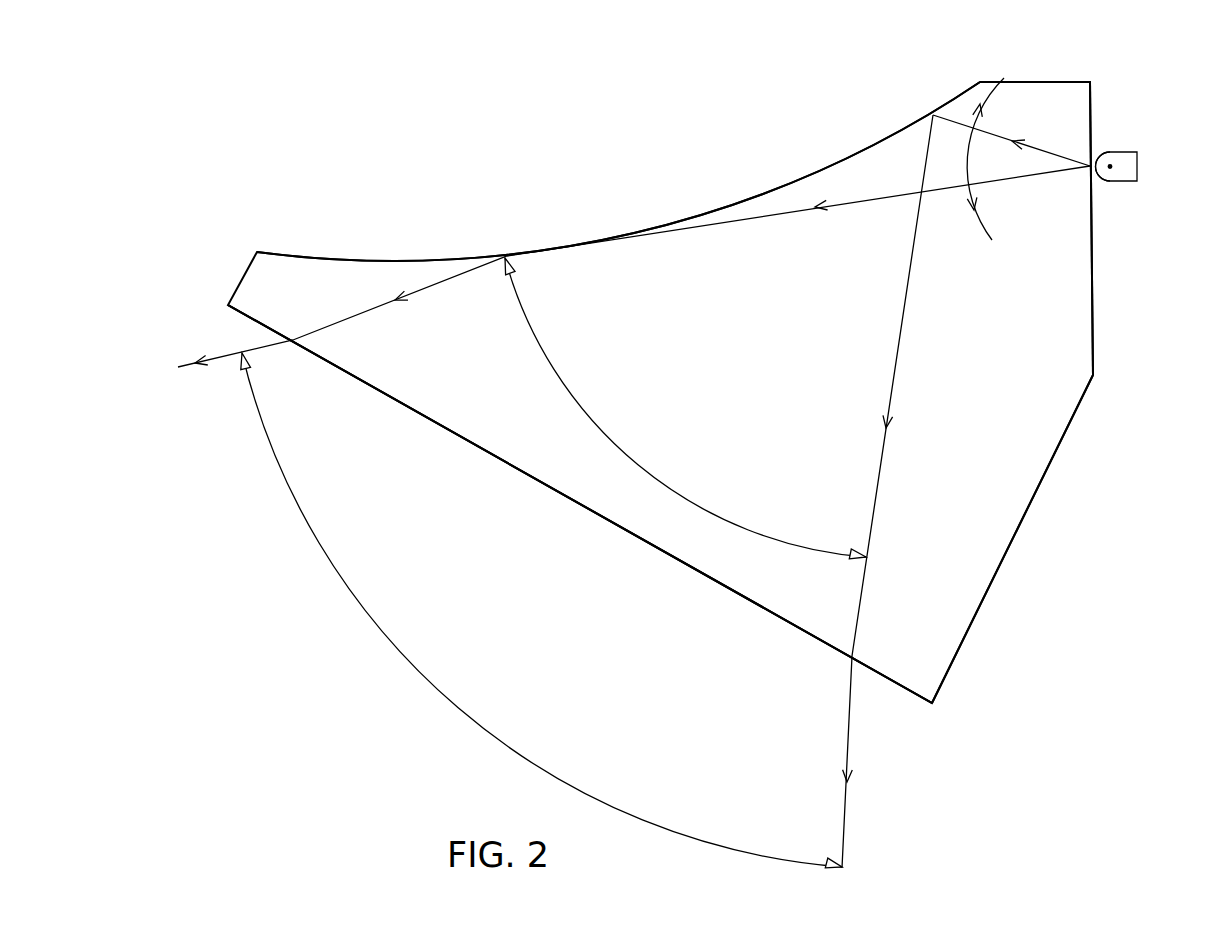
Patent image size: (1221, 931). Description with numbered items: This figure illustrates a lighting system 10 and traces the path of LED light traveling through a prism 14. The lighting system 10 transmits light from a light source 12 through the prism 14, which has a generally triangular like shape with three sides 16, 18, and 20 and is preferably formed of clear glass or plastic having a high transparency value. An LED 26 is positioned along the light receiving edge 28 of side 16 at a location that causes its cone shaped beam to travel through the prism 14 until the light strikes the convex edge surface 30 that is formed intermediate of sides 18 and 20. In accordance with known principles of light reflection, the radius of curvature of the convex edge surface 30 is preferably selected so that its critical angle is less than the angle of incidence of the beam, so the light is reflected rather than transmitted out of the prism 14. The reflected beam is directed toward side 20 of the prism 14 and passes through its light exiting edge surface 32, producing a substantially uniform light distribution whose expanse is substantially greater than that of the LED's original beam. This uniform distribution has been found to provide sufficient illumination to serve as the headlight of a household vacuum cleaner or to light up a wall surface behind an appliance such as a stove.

The lighting system 10 is at (572, 184).
The light source 12 is at (1128, 190).
The prism 14 is at (1010, 337).
The side 16 is at (1045, 507).
The side 18 is at (1026, 72).
The side 20 is at (768, 640).
The LED 26 is at (1110, 148).
The light receiving edge 28 is at (1093, 298).
The convex edge surface 30 is at (843, 162).
The light exiting edge surface 32 is at (587, 508).